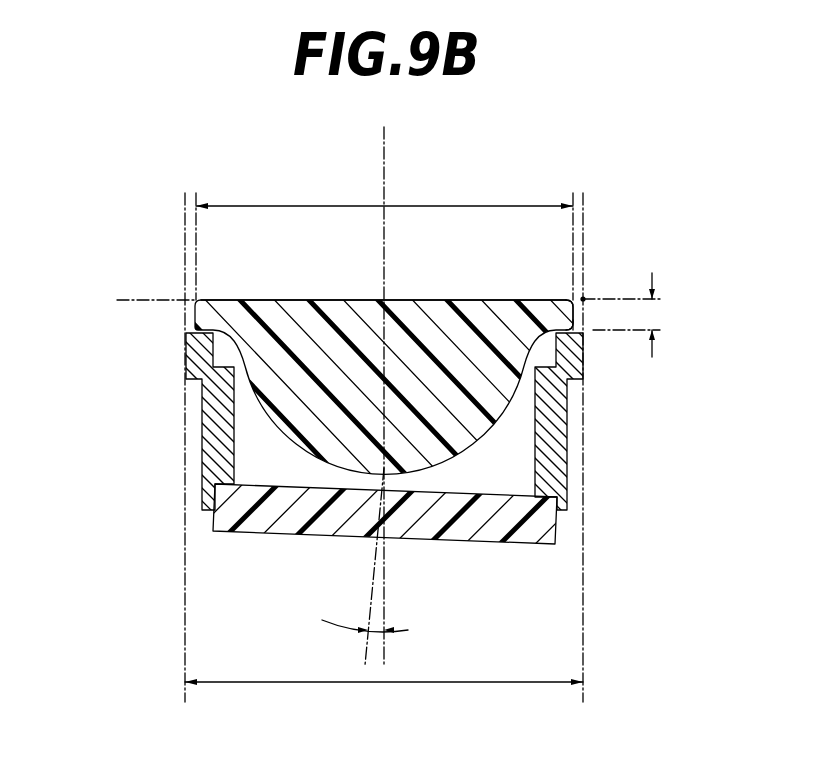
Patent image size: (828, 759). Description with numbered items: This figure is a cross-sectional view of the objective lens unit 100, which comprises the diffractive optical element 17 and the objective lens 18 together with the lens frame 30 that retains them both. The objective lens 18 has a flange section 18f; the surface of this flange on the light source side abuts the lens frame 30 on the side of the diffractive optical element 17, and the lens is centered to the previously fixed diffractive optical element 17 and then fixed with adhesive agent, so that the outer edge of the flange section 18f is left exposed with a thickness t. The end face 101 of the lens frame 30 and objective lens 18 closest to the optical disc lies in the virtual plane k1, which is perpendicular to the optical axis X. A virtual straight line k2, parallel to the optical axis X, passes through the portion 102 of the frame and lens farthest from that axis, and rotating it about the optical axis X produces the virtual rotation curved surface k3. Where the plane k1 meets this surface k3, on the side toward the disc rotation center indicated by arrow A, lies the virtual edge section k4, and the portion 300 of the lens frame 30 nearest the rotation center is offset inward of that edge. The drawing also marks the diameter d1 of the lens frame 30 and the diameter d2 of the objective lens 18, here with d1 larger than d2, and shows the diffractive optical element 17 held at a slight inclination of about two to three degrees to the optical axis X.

The objective lens unit 100 is at (430, 358).
The objective lens 18 is at (430, 366).
The end face 101 is at (355, 299).
The flange section 18f is at (566, 309).
The portion 102 is at (186, 356).
The lens frame 30 is at (392, 425).
The diffractive optical element 17 is at (440, 535).
The portion 300 is at (585, 326).
The virtual plane k1 is at (154, 299).
The virtual straight line k2 is at (182, 567).
The virtual rotation curved surface k3 is at (584, 588).
The virtual edge section k4 is at (585, 297).
The optical axis X is at (386, 145).
The arrow A is at (634, 209).
The thickness t is at (662, 315).
The diameter of the lens frame d1 is at (384, 699).
The diameter of the objective lens d2 is at (384, 234).